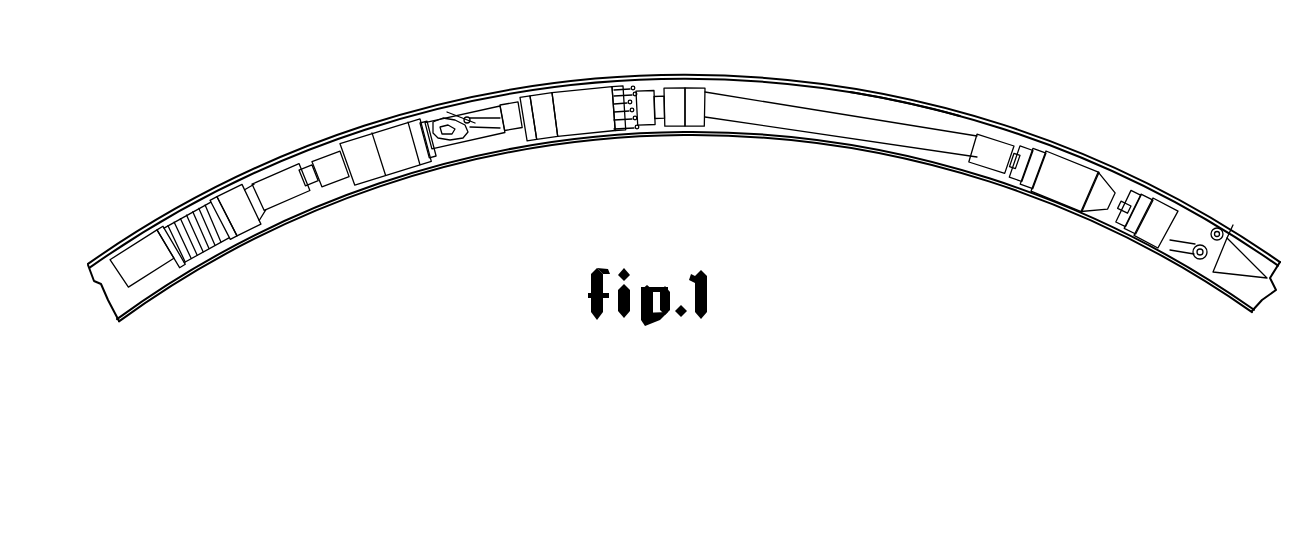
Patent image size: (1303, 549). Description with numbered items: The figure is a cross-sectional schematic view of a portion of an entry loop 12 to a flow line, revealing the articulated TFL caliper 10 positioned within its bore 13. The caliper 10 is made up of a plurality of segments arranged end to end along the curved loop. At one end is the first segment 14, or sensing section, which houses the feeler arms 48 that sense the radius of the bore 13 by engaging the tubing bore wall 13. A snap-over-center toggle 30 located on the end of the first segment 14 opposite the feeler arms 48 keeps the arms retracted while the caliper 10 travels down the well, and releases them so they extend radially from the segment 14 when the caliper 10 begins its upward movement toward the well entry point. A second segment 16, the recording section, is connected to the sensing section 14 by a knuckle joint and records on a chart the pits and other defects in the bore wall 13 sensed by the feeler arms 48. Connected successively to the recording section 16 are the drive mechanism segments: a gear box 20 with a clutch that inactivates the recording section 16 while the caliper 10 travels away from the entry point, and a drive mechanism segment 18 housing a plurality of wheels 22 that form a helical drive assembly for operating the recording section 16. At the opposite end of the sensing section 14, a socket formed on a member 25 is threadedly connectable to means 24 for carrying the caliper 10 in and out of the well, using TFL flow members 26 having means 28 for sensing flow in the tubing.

The articulated TFL caliper 10 is at (384, 164).
The entry loop 12 is at (556, 84).
The bore 13 is at (900, 112).
The first segment 14 is at (593, 120).
The second segment 16 is at (798, 118).
The drive mechanism segment 18 is at (1162, 237).
The gear box 20 is at (1077, 178).
The wheels 22 is at (1227, 232).
The means for carrying the caliper 24 is at (355, 155).
The member 25 is at (418, 146).
The TFL flow members 26 is at (142, 254).
The means for sensing flow 28 is at (187, 207).
The snap-over-center toggle 30 is at (482, 124).
The feeler arms 48 is at (626, 88).